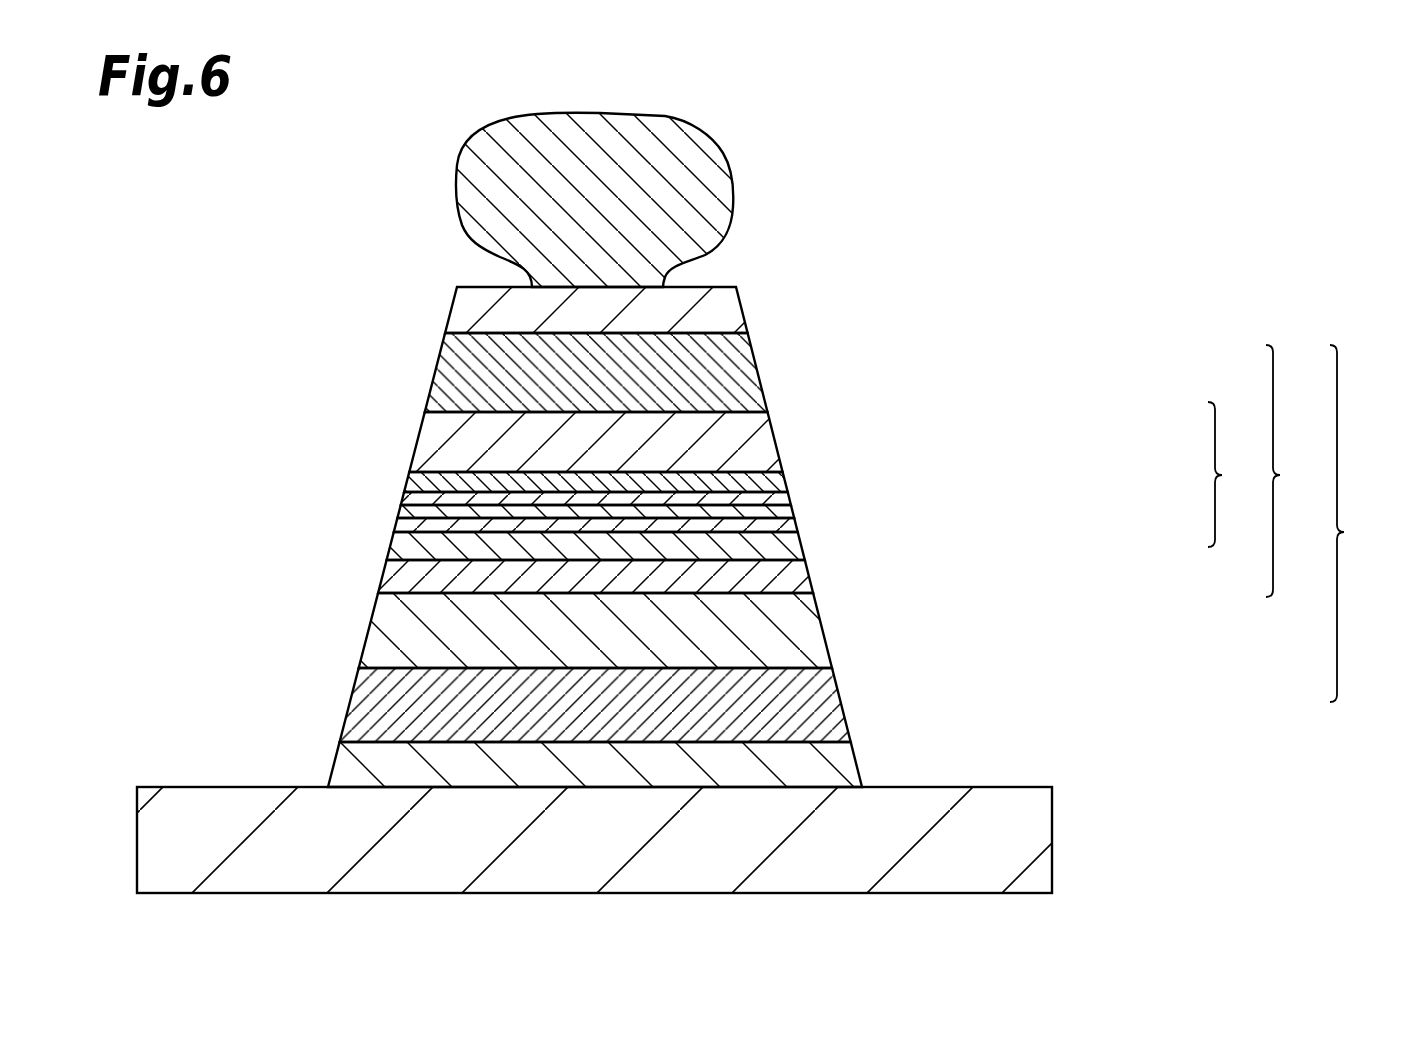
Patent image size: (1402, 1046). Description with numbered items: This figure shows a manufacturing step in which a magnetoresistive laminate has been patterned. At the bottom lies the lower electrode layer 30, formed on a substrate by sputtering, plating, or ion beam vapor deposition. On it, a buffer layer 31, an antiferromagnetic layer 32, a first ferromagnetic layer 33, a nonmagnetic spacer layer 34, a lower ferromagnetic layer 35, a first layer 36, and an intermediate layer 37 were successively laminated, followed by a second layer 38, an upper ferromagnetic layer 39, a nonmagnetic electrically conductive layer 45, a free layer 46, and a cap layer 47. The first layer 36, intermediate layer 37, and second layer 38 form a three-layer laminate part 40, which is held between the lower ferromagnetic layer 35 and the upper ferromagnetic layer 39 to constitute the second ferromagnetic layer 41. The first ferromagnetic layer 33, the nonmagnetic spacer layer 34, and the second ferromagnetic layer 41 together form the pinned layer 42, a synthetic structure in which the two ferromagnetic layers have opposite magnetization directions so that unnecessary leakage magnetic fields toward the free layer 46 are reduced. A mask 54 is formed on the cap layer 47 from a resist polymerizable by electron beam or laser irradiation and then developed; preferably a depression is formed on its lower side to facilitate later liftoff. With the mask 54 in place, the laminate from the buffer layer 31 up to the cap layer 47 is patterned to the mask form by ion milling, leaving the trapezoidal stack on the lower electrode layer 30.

The lower electrode layer 30 is at (1053, 855).
The buffer layer 31 is at (857, 763).
The antiferromagnetic layer 32 is at (842, 698).
The first ferromagnetic layer 33 is at (820, 622).
The nonmagnetic spacer layer 34 is at (810, 572).
The lower ferromagnetic layer 35 is at (800, 540).
The first layer 36 is at (793, 520).
The intermediate layer 37 is at (787, 507).
The second layer 38 is at (788, 497).
The upper ferromagnetic layer 39 is at (784, 479).
The laminate part 40 is at (833, 474).
The second ferromagnetic layer 41 is at (858, 473).
The pinned layer 42 is at (878, 527).
The nonmagnetic electrically conductive layer 45 is at (777, 437).
The free layer 46 is at (758, 373).
The cap layer 47 is at (740, 310).
The mask 54 is at (723, 150).